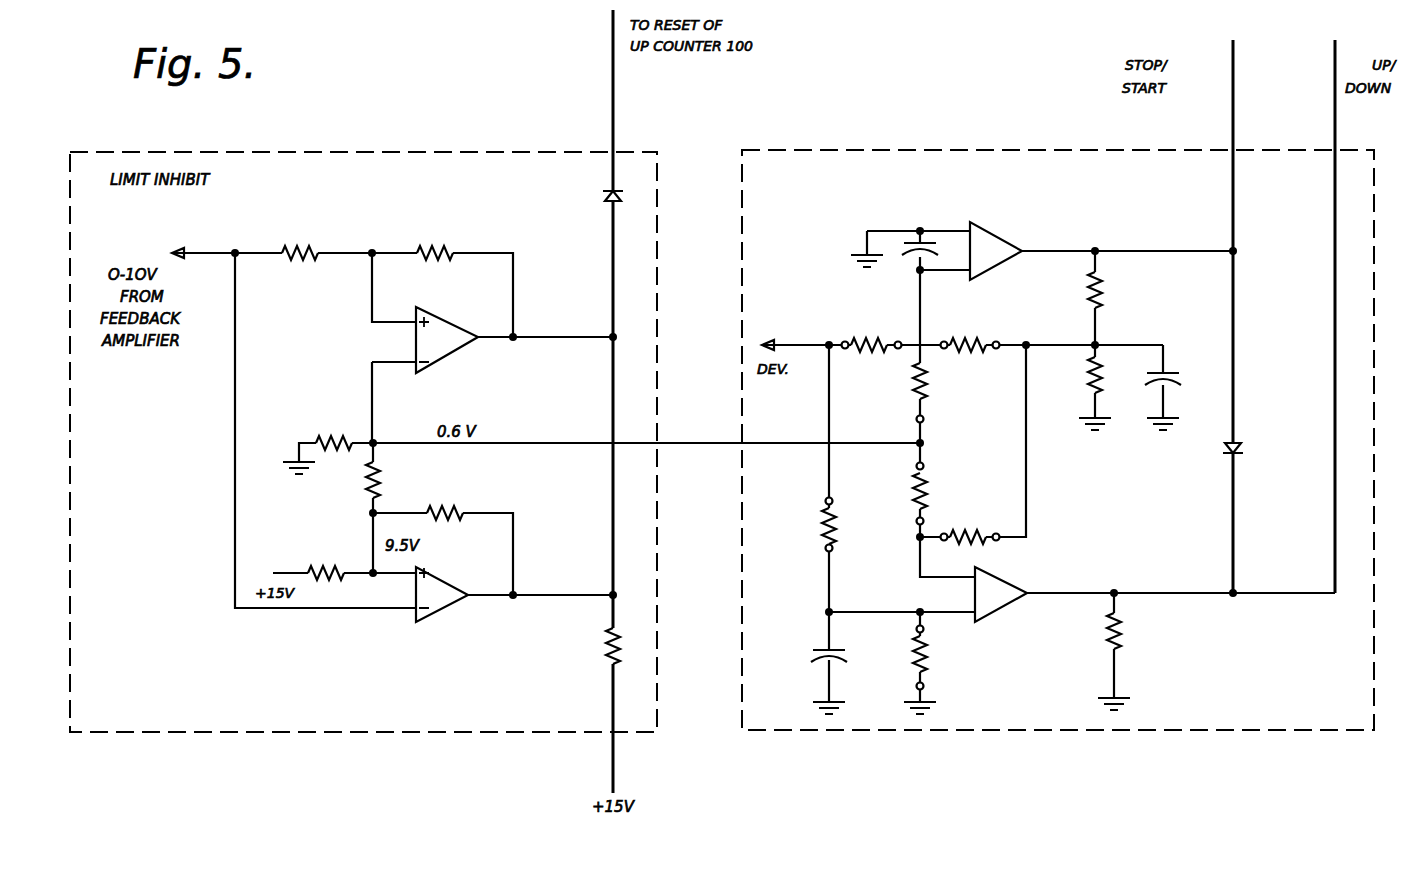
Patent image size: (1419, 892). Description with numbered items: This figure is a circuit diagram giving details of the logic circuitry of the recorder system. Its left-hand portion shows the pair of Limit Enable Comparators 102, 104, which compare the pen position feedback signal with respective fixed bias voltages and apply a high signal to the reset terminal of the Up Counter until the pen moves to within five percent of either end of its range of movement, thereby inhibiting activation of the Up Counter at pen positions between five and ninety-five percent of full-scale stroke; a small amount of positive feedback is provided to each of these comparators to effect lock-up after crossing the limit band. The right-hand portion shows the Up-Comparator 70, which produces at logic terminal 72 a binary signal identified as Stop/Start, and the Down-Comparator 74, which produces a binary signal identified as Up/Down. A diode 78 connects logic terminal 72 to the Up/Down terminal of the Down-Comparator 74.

The Limit Enable Comparator 104 is at (324, 226).
The Limit Enable Comparator 102 is at (298, 650).
The Up-Comparator 70 is at (1101, 246).
The Down-Comparator 74 is at (1002, 603).
The logic terminal 72 is at (1247, 251).
The diode 78 is at (1245, 450).